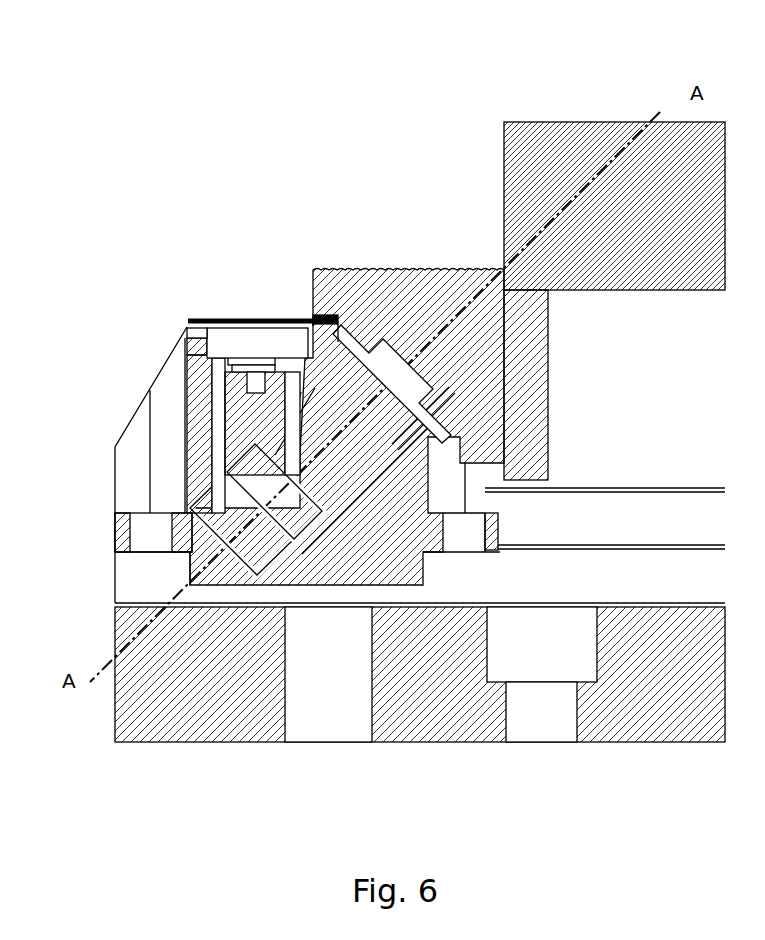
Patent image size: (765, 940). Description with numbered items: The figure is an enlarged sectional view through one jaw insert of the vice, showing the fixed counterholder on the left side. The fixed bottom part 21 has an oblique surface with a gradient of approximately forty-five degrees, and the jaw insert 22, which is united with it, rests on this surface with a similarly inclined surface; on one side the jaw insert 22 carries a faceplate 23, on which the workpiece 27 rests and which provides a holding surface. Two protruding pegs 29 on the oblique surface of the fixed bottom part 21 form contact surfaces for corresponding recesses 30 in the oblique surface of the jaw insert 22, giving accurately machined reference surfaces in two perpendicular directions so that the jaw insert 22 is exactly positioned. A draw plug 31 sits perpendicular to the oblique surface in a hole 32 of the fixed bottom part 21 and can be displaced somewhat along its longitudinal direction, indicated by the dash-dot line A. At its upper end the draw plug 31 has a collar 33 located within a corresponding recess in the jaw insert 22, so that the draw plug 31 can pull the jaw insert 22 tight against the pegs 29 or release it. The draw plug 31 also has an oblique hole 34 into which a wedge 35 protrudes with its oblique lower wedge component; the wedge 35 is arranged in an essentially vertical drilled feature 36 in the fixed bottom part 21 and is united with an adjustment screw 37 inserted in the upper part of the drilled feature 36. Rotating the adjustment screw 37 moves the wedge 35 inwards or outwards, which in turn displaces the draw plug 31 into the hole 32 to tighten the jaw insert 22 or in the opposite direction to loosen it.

The fixed bottom part 21 is at (188, 532).
The jaw insert 22 is at (353, 287).
The faceplate 23 is at (525, 323).
The workpiece 27 is at (566, 140).
The protruding pegs 29 is at (313, 318).
The recesses 30 is at (320, 312).
The draw plug 31 is at (355, 452).
The hole 32 is at (190, 553).
The collar 33 is at (397, 350).
The oblique hole 34 is at (296, 495).
The wedge 35 is at (255, 492).
The drilled feature 36 is at (220, 417).
The adjustment screw 37 is at (240, 340).